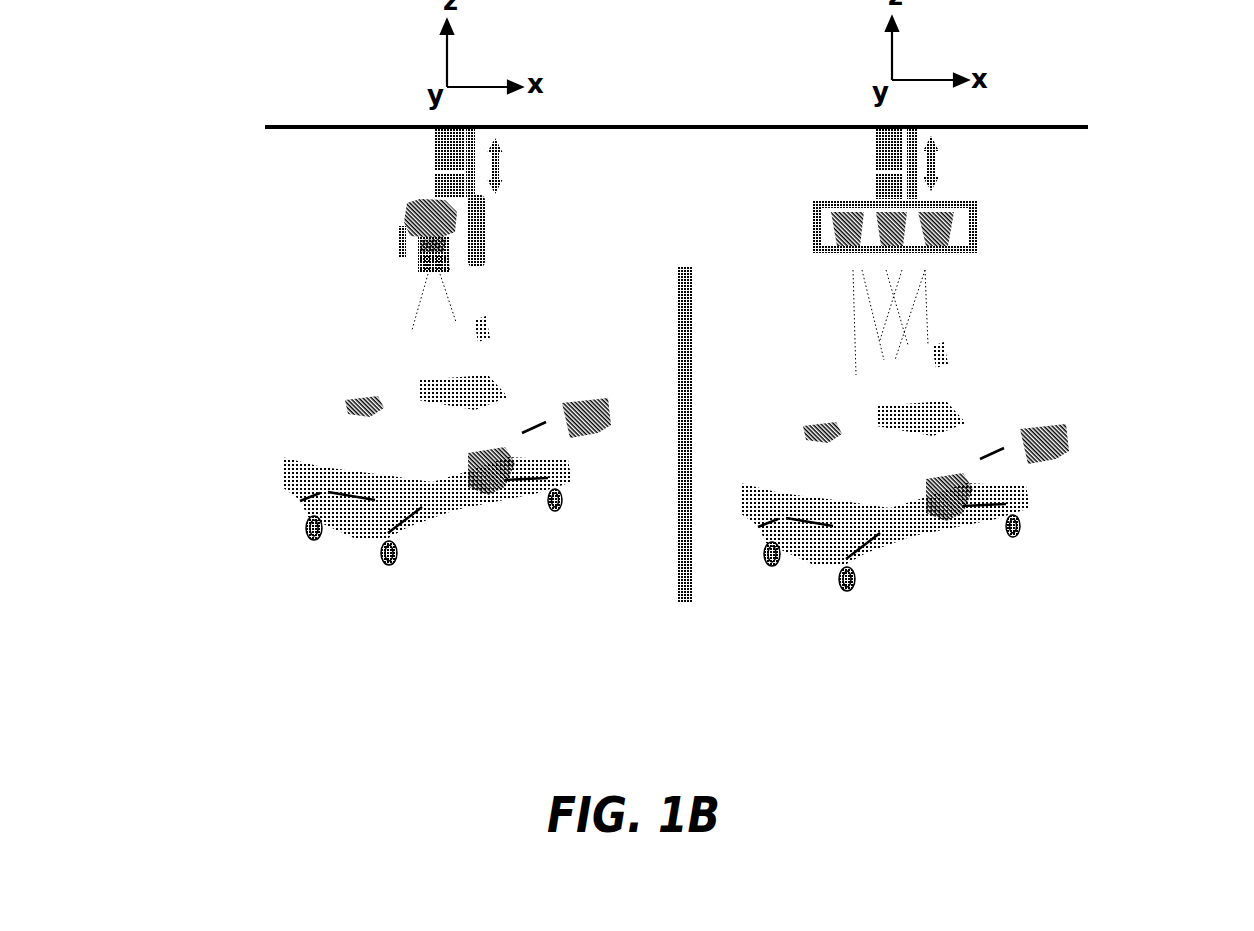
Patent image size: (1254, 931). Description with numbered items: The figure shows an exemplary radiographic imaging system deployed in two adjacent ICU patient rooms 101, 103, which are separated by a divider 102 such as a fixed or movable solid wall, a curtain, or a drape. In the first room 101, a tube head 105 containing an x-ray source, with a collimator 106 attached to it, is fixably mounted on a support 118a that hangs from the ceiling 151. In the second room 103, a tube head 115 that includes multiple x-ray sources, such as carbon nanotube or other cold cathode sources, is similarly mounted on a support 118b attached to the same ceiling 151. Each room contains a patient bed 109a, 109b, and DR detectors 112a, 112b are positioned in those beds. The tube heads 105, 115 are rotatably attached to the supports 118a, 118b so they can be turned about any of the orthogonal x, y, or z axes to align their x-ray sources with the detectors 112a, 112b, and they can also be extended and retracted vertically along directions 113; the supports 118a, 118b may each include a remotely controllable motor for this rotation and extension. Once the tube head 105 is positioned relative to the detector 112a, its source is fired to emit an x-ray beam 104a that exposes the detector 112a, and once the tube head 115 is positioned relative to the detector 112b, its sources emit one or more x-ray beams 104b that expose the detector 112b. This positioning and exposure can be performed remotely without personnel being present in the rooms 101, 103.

The ICU patient room 101 is at (204, 374).
The divider 102 is at (676, 582).
The ICU patient room 103 is at (1163, 356).
The x-ray beam 104a is at (420, 326).
The x-ray beams 104b is at (840, 330).
The tube head 105 is at (368, 243).
The collimator 106 is at (455, 270).
The patient bed 109a is at (265, 478).
The patient bed 109b is at (1080, 406).
The DR detector 112a is at (486, 494).
The DR detector 112b is at (1010, 500).
The vertical directions 113 is at (505, 175).
The tube head 115 is at (768, 212).
The support 118a is at (443, 150).
The support 118b is at (887, 158).
The ceiling 151 is at (1018, 129).